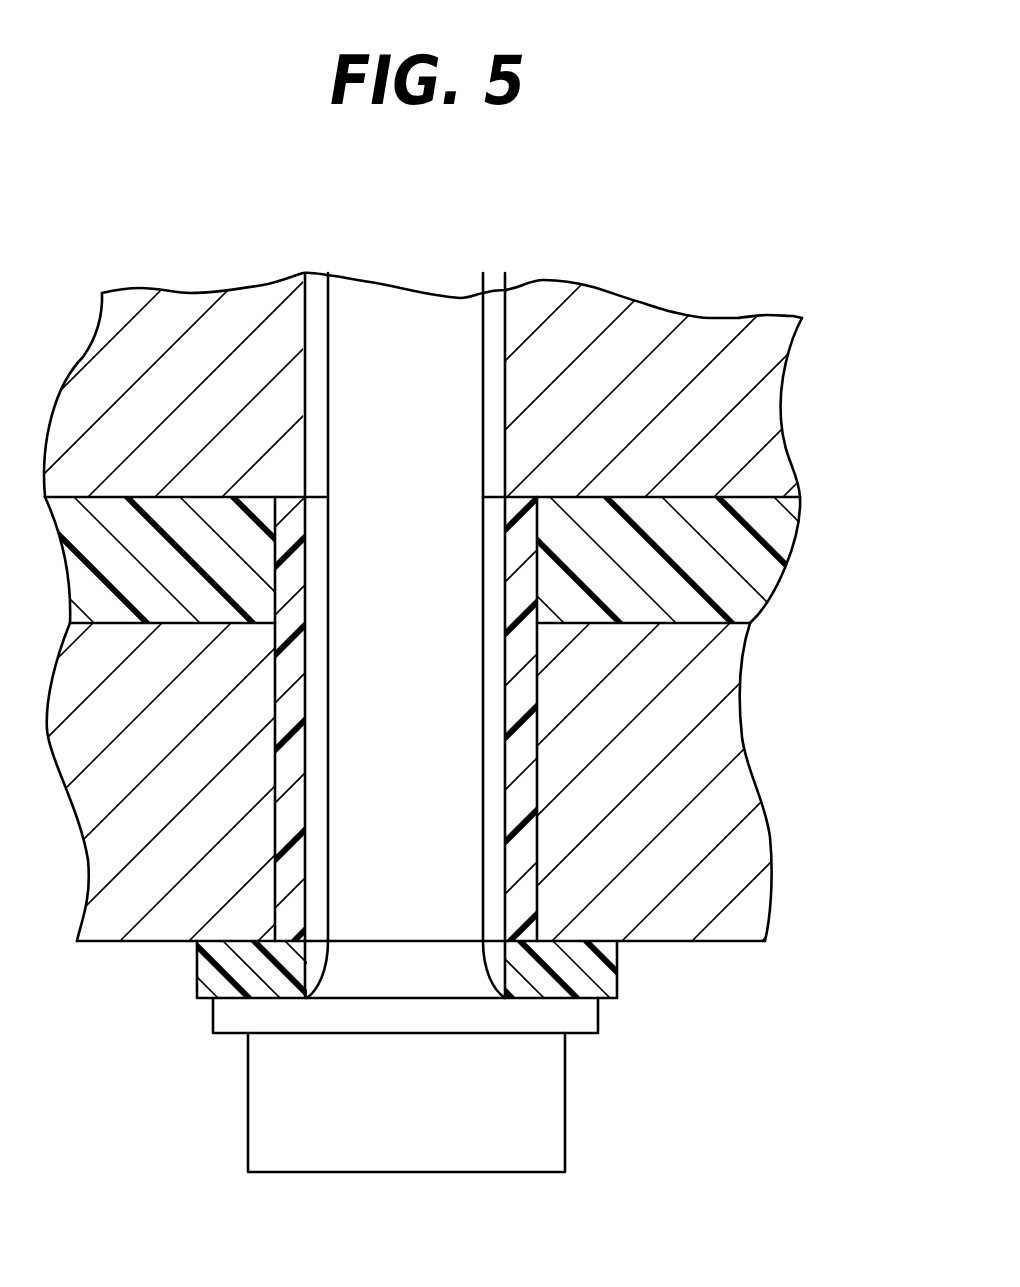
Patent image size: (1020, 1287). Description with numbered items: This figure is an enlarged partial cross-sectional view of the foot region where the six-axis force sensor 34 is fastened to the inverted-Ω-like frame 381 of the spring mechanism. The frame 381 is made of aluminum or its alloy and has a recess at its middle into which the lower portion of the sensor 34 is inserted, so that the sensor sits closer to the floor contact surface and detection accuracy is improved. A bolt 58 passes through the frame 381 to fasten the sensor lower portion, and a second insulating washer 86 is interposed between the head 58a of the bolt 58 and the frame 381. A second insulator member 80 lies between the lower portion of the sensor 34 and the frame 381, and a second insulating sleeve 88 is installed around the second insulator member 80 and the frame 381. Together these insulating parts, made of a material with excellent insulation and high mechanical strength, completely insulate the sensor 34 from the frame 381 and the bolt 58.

The six-axis force sensor 34 is at (655, 330).
The second insulator member 80 is at (763, 556).
The inverted-Ω-like frame 381 is at (715, 733).
The second insulating sleeve 88 is at (527, 862).
The bolt 58 is at (427, 805).
The second insulating washer 86 is at (605, 986).
The head of the bolt 58a is at (558, 1108).